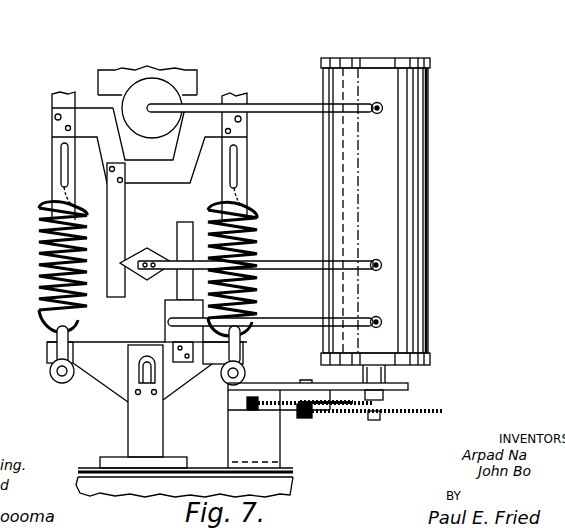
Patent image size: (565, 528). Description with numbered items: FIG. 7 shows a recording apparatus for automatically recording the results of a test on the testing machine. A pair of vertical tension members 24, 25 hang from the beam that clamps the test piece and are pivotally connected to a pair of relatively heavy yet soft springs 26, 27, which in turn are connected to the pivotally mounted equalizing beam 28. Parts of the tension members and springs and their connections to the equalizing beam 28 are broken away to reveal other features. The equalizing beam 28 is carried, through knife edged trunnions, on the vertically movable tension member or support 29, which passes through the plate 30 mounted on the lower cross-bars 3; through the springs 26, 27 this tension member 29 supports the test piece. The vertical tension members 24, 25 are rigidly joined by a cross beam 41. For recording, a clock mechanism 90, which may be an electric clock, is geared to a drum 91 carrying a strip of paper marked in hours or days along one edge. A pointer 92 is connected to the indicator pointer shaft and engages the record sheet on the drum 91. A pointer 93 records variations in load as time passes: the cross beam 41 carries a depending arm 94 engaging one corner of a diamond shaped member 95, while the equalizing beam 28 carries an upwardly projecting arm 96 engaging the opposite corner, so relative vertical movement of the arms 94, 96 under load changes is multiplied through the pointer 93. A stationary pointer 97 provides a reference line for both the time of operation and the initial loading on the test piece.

The lower cross-bars 3 is at (293, 484).
The vertical tension member 24 is at (243, 98).
The vertical tension member 25 is at (54, 97).
The spring 26 is at (258, 212).
The spring 27 is at (40, 236).
The equalizing beam 28 is at (47, 346).
The tension member 29 is at (133, 410).
The plate 30 is at (160, 468).
The cross beam 41 is at (53, 112).
The clock mechanism 90 is at (398, 446).
The drum 91 is at (418, 353).
The pointer 92 is at (279, 106).
The pointer 93 is at (290, 268).
The depending arm 94 is at (114, 210).
The diamond shaped member 95 is at (147, 255).
The upwardly projecting arm 96 is at (177, 287).
The stationary pointer 97 is at (282, 326).